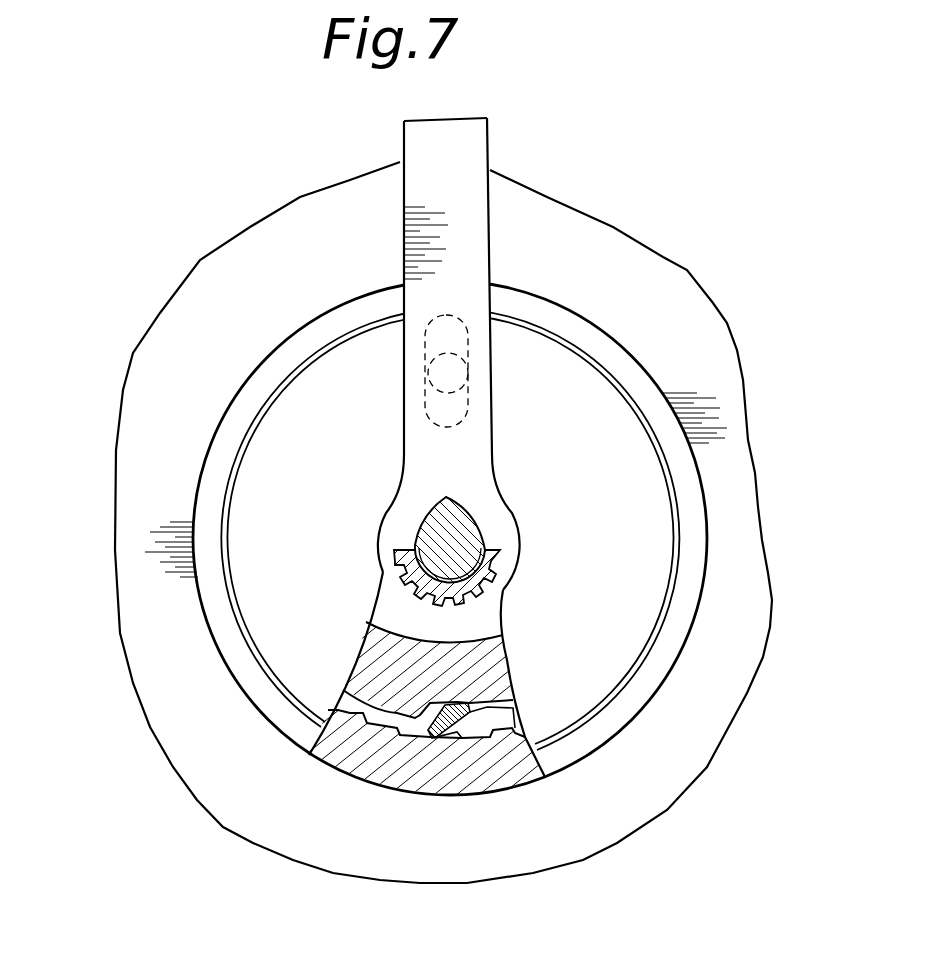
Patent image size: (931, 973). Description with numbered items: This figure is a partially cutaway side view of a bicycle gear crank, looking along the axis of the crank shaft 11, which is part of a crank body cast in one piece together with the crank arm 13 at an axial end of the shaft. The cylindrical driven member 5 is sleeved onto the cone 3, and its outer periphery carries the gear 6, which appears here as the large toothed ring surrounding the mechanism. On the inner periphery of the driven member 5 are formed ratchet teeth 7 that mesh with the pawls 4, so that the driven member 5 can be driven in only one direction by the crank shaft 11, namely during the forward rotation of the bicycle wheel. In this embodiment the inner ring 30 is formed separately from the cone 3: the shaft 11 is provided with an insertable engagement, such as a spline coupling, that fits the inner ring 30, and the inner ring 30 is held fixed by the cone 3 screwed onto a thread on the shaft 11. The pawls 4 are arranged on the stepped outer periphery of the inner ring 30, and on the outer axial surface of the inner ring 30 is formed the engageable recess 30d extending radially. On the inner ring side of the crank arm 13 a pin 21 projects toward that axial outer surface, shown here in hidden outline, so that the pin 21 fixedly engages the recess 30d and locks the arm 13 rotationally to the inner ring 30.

The crank arm 13 is at (468, 170).
The pin 21 is at (453, 372).
The gear 6 is at (693, 320).
The engageable recess 30d is at (462, 397).
The crank shaft 11 is at (463, 535).
The cone 3 is at (481, 568).
The inner ring 30 is at (503, 652).
The pawls 4 is at (470, 708).
The ratchet teeth 7 is at (517, 723).
The cylindrical driven member 5 is at (503, 777).